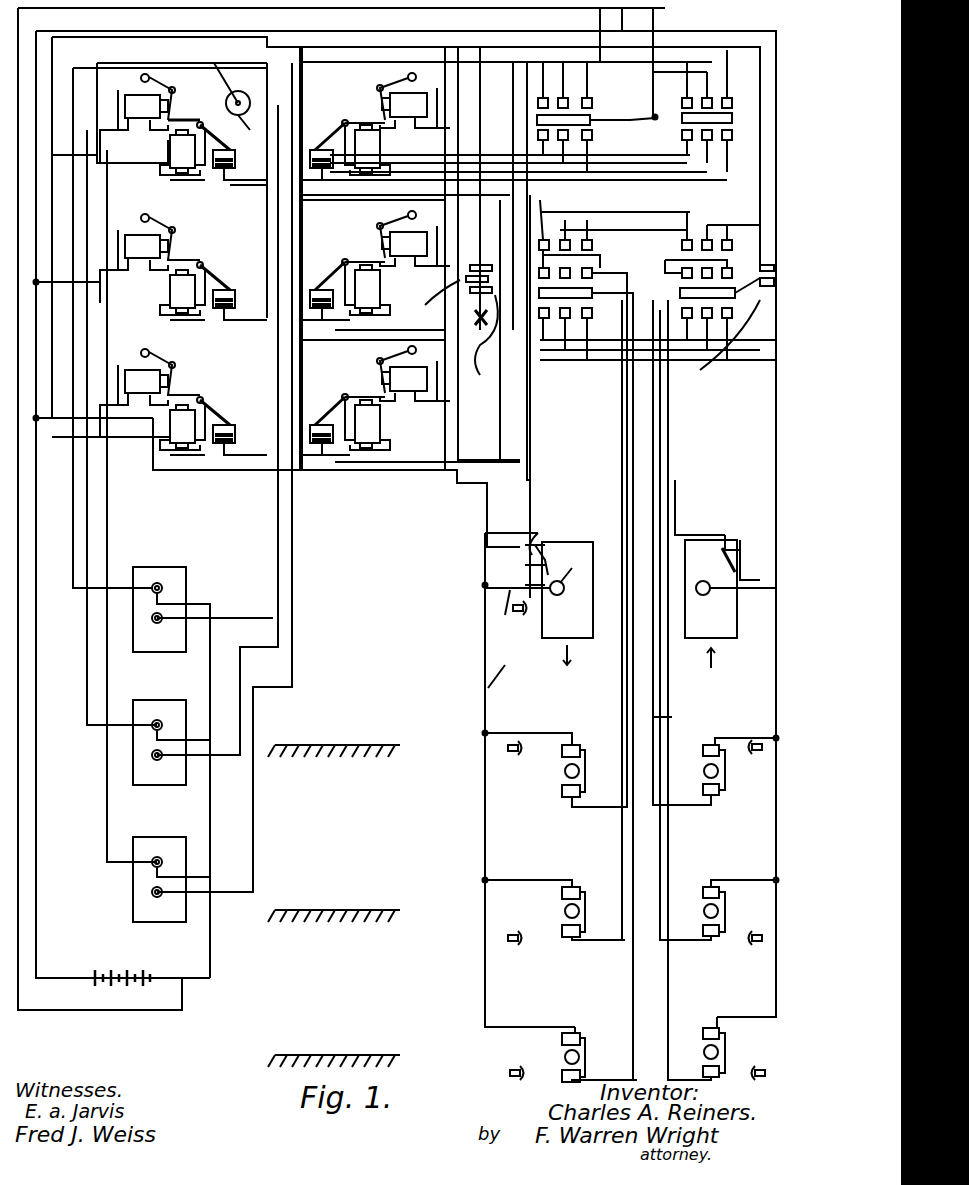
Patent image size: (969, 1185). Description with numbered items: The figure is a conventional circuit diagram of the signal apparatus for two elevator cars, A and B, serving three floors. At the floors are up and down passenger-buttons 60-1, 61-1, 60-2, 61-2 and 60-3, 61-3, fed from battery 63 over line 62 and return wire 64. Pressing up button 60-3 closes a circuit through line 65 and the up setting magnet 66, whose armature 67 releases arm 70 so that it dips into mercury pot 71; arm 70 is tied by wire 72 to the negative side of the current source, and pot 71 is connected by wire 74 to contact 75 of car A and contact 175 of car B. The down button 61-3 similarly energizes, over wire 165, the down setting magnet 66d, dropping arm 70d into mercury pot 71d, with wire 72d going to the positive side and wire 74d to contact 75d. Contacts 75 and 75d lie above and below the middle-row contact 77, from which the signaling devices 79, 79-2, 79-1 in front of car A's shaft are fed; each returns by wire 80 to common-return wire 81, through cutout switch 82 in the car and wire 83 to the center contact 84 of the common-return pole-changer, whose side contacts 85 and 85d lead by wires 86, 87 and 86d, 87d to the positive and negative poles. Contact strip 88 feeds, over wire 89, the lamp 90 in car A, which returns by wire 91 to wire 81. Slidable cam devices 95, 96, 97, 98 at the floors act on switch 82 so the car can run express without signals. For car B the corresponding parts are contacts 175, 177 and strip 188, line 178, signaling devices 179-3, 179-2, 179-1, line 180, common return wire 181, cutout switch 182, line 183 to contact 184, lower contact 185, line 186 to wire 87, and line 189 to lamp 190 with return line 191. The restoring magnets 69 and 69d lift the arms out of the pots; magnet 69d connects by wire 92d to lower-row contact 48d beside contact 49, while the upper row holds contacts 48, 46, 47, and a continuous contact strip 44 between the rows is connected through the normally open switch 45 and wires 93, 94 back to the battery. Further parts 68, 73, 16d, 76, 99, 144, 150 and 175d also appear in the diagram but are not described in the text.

The wire 87d is at (290, 47).
The wire 87 is at (418, 47).
The wire 93 is at (585, 60).
The wire 94 is at (582, 34).
The setting magnet 66 is at (145, 118).
The armature 67 is at (172, 100).
The contact arm 68 is at (199, 124).
The restoring magnet 69 is at (185, 155).
The switch arm 70 is at (222, 143).
The mercury pot 71 is at (222, 168).
The wire 72 is at (228, 180).
The conductor 73 is at (267, 250).
The wire 74 is at (248, 189).
The down setting magnet 66d is at (413, 105).
The down restoring magnet 69d is at (372, 160).
The down switch arm 70d is at (350, 121).
The down mercury pot 71d is at (320, 148).
The wire 92d is at (362, 258).
The wire 74d is at (555, 182).
The wire 72d is at (378, 341).
The conductor 16d is at (482, 258).
The wire 86d is at (505, 263).
The contact 48 is at (519, 92).
The contact strip 44 is at (537, 128).
The contact 48d is at (506, 149).
The contact 46 is at (554, 86).
The contact 47 is at (601, 82).
The normally open switch 45 is at (623, 96).
The contact 150 is at (641, 117).
The contact 49 is at (599, 146).
The switch 144 is at (712, 115).
The line 186 is at (744, 156).
The contact 175 is at (687, 240).
The contact strip 188 is at (735, 265).
The contact 177 is at (687, 268).
The contact 85d is at (425, 296).
The contact 84 is at (482, 265).
The wire 86 is at (486, 261).
The contact 75 is at (602, 389).
The contact 85 is at (485, 337).
The contact 77 is at (545, 320).
The contact 75d is at (565, 320).
The conductor 76 is at (622, 420).
The wire 89 is at (633, 452).
The contact strip 88 is at (592, 293).
The contact 185 is at (730, 340).
The contact 184 is at (727, 318).
The conductor 175d is at (687, 318).
The line 183 is at (760, 442).
The line 189 is at (675, 463).
The line 65 is at (87, 488).
The wire 165 is at (273, 515).
The up passenger-button 60-3 is at (162, 588).
The down passenger-button 61-3 is at (152, 618).
The up passenger-button 60-2 is at (162, 725).
The down passenger-button 61-2 is at (152, 755).
The up passenger-button 60-1 is at (135, 862).
The down passenger-button 61-1 is at (152, 892).
The line 62 is at (210, 810).
The battery 63 is at (150, 970).
The wire 64 is at (36, 790).
The conductor 99 is at (18, 898).
The wire 83 is at (485, 522).
The cutout switch 82 is at (565, 555).
The lamp 90 is at (538, 608).
The return wire 91 is at (504, 613).
The cam device 95 is at (511, 627).
The common-return wire 81 is at (506, 669).
The wire 80 is at (562, 733).
The cam device 96 is at (513, 752).
The signaling device 79 is at (560, 760).
The signaling device 79-2 is at (555, 910).
The cam device 97 is at (514, 950).
The cam device 98 is at (512, 1070).
The signaling device 79-1 is at (562, 1050).
The cutout switch 182 is at (722, 555).
The lamp 190 is at (730, 604).
The line 191 is at (728, 566).
The common return wire 181 is at (776, 707).
The line 178 is at (683, 716).
The line 180 is at (722, 750).
The signaling device 179-3 is at (706, 776).
The signaling device 179-2 is at (720, 920).
The signaling device 179-1 is at (722, 1065).